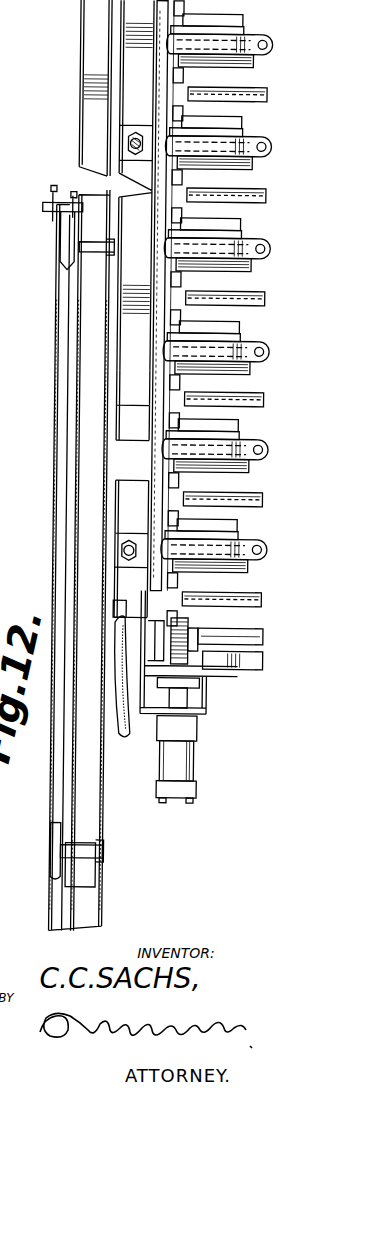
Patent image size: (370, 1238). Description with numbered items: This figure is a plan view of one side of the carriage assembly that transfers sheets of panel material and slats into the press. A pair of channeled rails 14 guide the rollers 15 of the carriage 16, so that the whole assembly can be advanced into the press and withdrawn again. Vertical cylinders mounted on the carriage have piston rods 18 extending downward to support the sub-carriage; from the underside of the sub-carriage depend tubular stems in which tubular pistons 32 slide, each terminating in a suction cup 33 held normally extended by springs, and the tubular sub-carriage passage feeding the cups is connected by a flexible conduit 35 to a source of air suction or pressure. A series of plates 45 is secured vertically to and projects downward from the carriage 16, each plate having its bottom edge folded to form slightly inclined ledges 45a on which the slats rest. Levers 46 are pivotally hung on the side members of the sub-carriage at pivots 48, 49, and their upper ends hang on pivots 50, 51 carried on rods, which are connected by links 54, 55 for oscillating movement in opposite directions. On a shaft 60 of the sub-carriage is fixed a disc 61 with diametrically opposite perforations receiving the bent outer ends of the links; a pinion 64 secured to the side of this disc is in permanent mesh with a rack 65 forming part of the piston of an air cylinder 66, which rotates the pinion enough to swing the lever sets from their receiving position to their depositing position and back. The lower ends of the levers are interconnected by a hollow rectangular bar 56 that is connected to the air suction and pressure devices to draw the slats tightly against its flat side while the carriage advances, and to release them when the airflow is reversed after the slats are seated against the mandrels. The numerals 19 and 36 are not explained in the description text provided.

The rails 14 is at (54, 884).
The rollers 15 is at (56, 252).
The carriage 16 is at (104, 822).
The rods 18 is at (122, 140).
The support 19 is at (20, 18).
The tubular pistons 32 is at (5, 546).
The suction cup 33 is at (9, 140).
The flexible conduit 35 is at (128, 738).
The member 36 is at (38, 630).
The plates 45 is at (258, 200).
The ledges 45a is at (268, 504).
The levers 46 is at (158, 262).
The pivot 48 is at (149, 408).
The pivot 49 is at (148, 372).
The pivot 50 is at (138, 458).
The pivot 51 is at (150, 338).
The link 54 is at (148, 578).
The link 55 is at (137, 522).
The hollow rectangular bar 56 is at (240, 591).
The shaft 60 is at (262, 664).
The disc 61 is at (150, 666).
The pinion 64 is at (205, 648).
The rack 65 is at (178, 617).
The air cylinder 66 is at (196, 752).